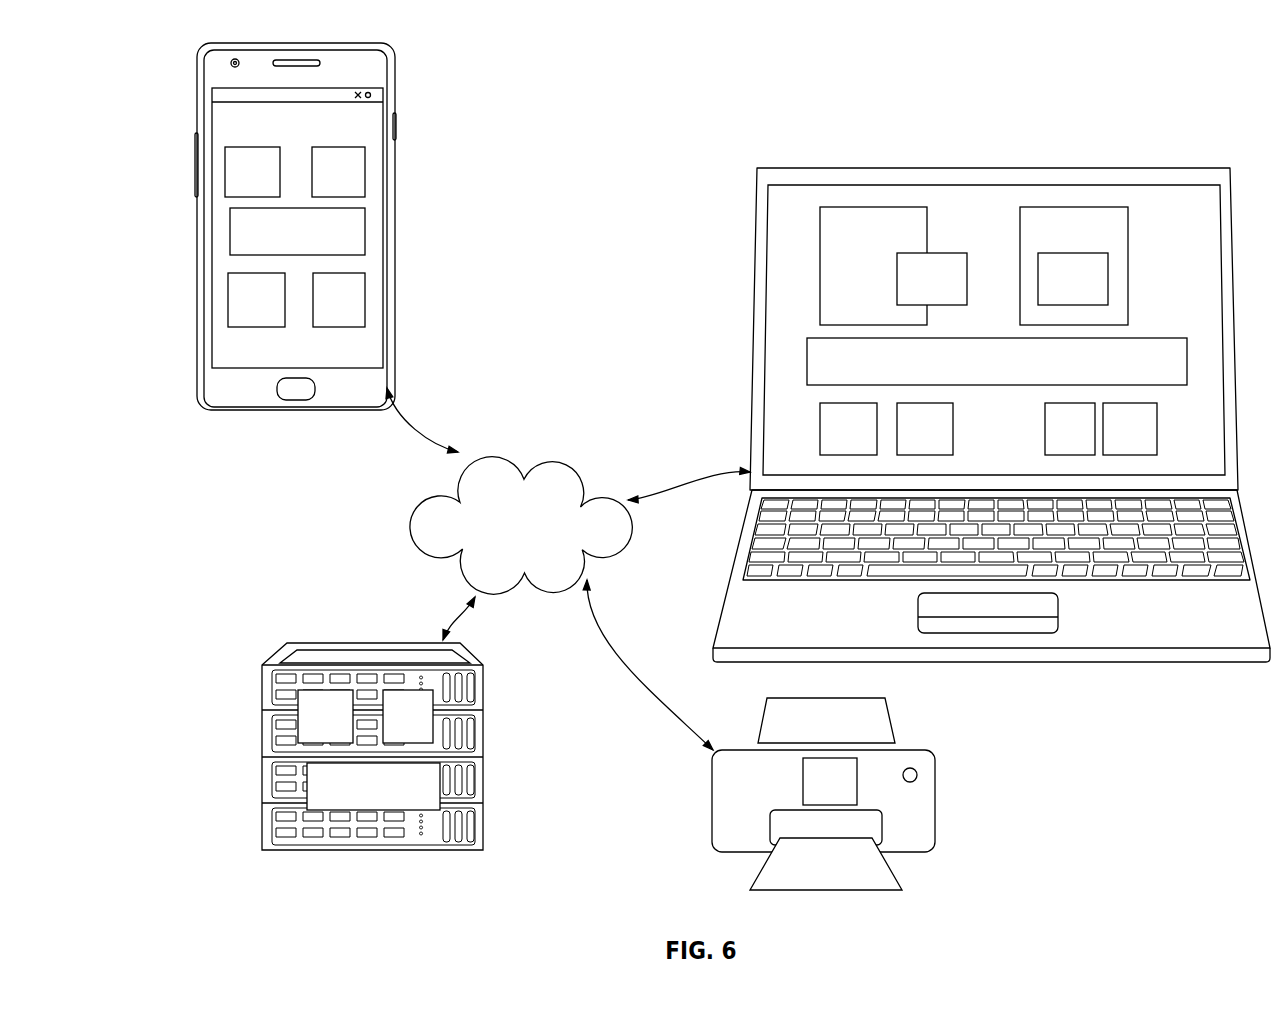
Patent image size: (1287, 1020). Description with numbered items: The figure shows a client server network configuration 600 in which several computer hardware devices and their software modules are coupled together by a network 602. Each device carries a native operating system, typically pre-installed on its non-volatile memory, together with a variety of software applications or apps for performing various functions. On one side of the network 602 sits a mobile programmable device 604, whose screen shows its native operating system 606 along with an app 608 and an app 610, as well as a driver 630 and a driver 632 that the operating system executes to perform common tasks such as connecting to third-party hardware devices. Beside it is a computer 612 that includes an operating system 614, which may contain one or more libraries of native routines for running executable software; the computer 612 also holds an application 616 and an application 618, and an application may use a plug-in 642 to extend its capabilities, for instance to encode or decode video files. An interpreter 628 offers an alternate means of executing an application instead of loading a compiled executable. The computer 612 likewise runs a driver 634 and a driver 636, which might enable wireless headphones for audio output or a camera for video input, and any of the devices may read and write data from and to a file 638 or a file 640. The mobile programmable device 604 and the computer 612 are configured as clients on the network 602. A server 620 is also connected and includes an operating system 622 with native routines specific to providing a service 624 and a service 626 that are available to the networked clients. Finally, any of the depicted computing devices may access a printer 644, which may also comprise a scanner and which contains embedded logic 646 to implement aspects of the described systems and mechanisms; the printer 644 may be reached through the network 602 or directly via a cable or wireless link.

The client server network configuration 600 is at (1183, 110).
The network 602 is at (579, 541).
The mobile programmable device 604 is at (205, 118).
The native operating system 606 is at (327, 245).
The app 608 is at (236, 186).
The app 610 is at (322, 186).
The computer 612 is at (753, 297).
The operating system 614 is at (1027, 375).
The application 616 is at (857, 241).
The application 618 is at (1058, 241).
The server 620 is at (262, 745).
The operating system 622 is at (403, 800).
The service 624 is at (392, 730).
The service 626 is at (309, 730).
The interpreter 628 is at (1057, 293).
The driver 630 is at (240, 314).
The driver 632 is at (323, 314).
The driver 634 is at (832, 443).
The driver 636 is at (909, 443).
The file 638 is at (1054, 443).
The file 640 is at (1114, 443).
The plug-in 642 is at (916, 293).
The printer 644 is at (935, 800).
The embedded logic 646 is at (814, 795).